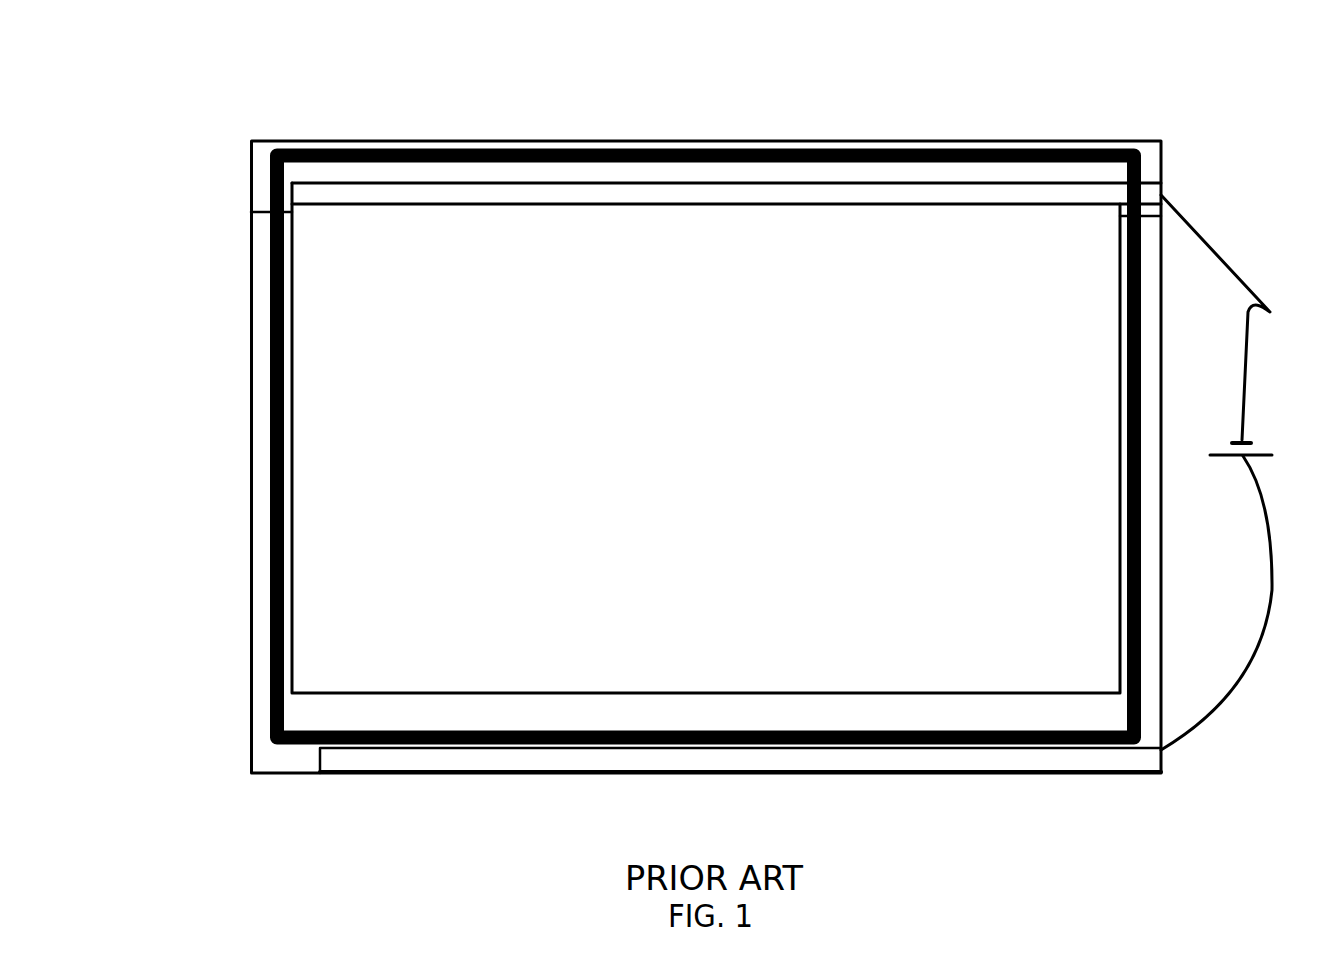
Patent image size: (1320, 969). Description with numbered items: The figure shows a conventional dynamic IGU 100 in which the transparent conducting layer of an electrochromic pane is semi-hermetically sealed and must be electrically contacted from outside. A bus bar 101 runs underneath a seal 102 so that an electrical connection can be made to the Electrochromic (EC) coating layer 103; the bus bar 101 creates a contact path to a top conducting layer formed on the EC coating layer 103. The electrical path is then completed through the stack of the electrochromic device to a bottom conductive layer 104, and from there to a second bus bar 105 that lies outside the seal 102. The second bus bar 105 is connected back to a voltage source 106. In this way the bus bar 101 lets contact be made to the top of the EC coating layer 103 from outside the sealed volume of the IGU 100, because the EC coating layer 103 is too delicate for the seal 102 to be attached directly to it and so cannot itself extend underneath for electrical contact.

The dynamic IGU 100 is at (270, 92).
The bus bar 101 is at (743, 195).
The seal 102 is at (1057, 150).
The EC coating layer 103 is at (450, 457).
The bottom conductive layer 104 is at (302, 759).
The second bus bar 105 is at (933, 760).
The voltage source 106 is at (1216, 472).